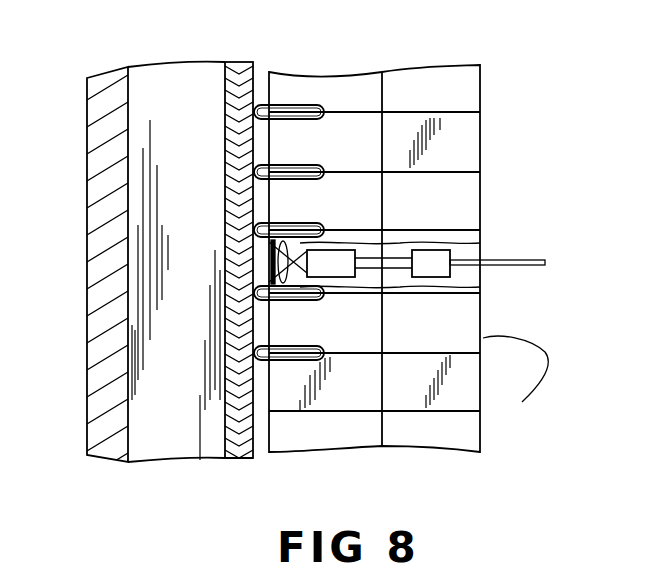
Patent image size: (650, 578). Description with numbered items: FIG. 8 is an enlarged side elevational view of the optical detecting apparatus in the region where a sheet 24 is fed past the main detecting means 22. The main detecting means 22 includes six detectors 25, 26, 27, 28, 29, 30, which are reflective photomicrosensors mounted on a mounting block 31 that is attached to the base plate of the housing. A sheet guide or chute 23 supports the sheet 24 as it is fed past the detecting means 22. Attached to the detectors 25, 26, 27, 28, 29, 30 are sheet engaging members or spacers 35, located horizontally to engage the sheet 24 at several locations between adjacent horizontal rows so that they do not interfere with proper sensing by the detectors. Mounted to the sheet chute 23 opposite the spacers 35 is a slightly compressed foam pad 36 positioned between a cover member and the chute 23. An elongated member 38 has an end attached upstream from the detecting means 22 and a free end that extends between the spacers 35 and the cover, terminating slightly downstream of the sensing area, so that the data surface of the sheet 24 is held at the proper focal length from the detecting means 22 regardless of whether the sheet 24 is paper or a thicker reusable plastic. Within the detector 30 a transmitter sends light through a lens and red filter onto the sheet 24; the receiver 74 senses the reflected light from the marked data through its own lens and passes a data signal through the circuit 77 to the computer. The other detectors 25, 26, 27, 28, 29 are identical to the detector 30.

The main detecting means 22 is at (468, 411).
The sheet guide or chute 23 is at (87, 423).
The sheet 24 is at (256, 76).
The detector 25 is at (466, 383).
The detector 26 is at (472, 321).
The detector 27 is at (470, 247).
The detector 28 is at (472, 198).
The detector 29 is at (466, 148).
The detector 30 is at (470, 84).
The mounting block 31 is at (410, 433).
The sheet engaging members or spacers 35 is at (292, 107).
The foam pad 36 is at (155, 452).
The elongated member 38 is at (228, 446).
The receiver 74 is at (340, 250).
The circuit 77 is at (416, 250).